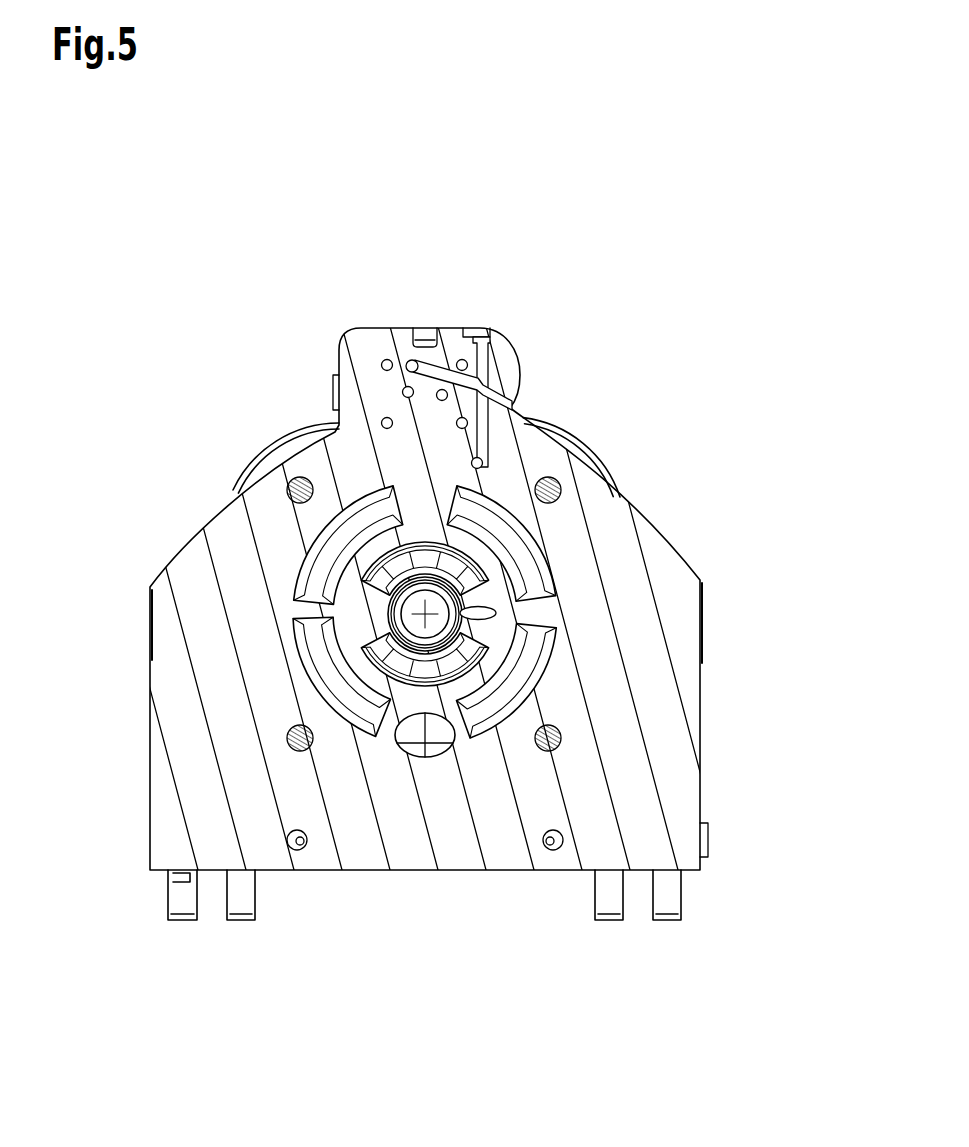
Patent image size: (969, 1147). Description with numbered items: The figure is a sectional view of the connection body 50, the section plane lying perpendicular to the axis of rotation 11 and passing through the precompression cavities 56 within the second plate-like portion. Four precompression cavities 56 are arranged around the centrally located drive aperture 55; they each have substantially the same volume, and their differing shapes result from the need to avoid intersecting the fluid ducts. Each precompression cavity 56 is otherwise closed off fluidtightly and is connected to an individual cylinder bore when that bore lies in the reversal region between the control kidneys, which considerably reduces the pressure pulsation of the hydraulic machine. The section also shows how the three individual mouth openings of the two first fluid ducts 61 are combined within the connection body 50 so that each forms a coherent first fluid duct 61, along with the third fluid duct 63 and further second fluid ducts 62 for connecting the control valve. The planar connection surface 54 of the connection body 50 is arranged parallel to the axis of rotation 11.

The connection body 50 is at (700, 254).
The connection surface 54 is at (518, 870).
The drive aperture 55 is at (435, 611).
The precompression cavities 56 is at (325, 565).
The first fluid ducts 61 is at (405, 545).
The second fluid ducts 62 is at (483, 369).
The third fluid duct 63 is at (440, 747).
The axis of rotation 11 is at (425, 614).